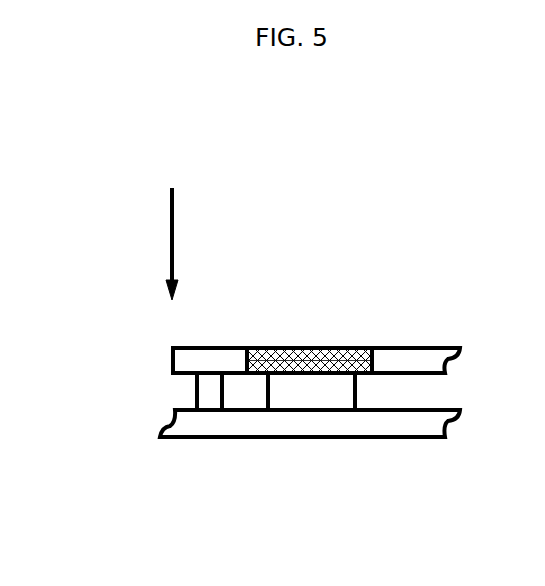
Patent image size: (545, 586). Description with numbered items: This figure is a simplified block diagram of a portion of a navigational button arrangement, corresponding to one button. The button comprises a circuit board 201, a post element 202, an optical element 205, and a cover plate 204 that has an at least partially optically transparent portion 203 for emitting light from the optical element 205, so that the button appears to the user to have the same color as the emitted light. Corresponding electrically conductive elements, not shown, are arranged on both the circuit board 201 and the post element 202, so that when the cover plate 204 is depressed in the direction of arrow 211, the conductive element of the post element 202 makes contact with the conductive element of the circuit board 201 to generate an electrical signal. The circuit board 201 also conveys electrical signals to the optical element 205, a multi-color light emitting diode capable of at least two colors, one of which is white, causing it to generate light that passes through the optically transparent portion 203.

The circuit board 201 is at (422, 447).
The post element 202 is at (185, 387).
The optically transparent portion 203 is at (335, 335).
The cover plate 204 is at (223, 335).
The optical element 205 is at (372, 398).
The arrow 211 is at (158, 225).